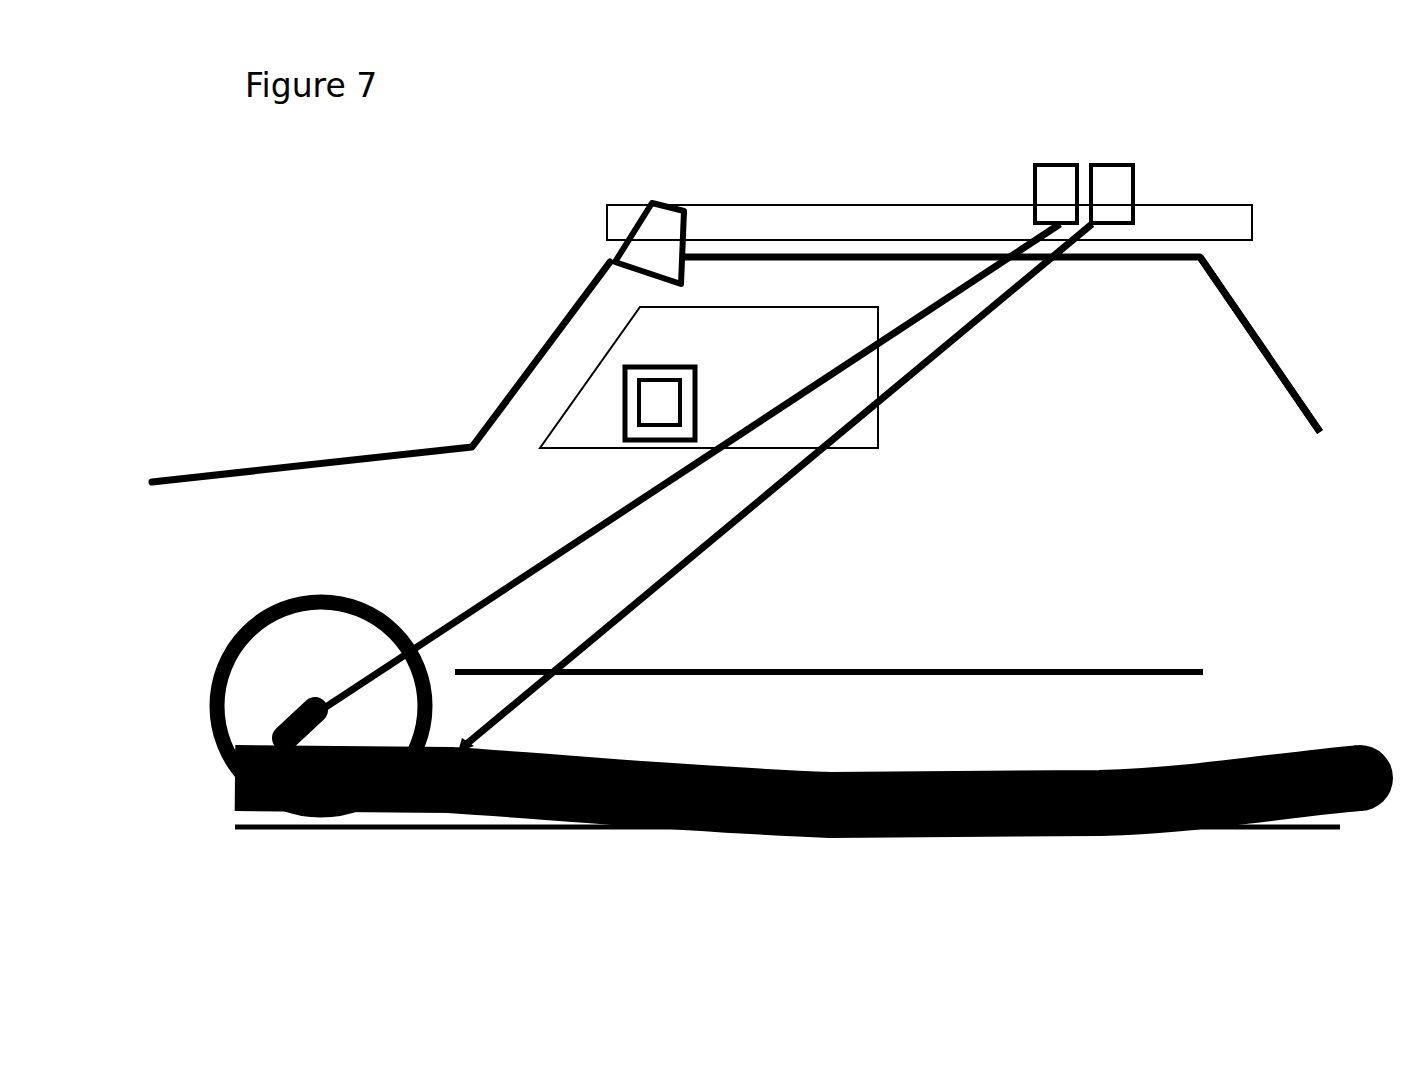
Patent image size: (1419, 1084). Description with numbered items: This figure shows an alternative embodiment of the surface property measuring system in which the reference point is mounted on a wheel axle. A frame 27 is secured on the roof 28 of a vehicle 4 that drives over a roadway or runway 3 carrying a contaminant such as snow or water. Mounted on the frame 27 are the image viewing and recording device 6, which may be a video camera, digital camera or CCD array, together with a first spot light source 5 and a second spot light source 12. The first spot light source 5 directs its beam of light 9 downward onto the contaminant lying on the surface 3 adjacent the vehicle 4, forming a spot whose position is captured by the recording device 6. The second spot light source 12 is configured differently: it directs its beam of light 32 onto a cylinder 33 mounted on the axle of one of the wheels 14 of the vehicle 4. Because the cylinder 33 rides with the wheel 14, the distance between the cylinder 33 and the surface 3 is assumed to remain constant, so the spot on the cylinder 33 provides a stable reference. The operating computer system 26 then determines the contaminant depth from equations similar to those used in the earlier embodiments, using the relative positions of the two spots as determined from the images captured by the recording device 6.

The roadway or runway 3 is at (998, 913).
The vehicle 4 is at (398, 483).
The spot light source 5 is at (1117, 165).
The image viewing and recording device 6 is at (657, 203).
The beam of light 9 is at (710, 553).
The second spot light source 12 is at (1035, 165).
The wheel 14 is at (243, 697).
The operating computer system 26 is at (623, 380).
The frame 27 is at (858, 222).
The roof 28 is at (1198, 253).
The beam of light 32 is at (497, 600).
The cylinder 33 is at (228, 767).